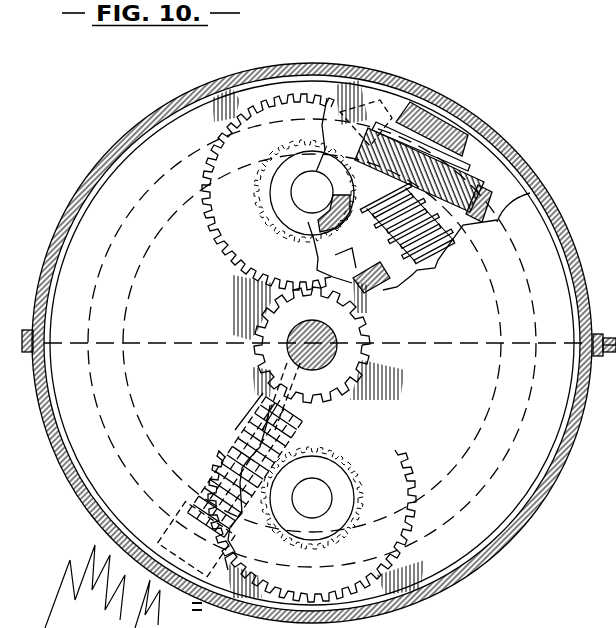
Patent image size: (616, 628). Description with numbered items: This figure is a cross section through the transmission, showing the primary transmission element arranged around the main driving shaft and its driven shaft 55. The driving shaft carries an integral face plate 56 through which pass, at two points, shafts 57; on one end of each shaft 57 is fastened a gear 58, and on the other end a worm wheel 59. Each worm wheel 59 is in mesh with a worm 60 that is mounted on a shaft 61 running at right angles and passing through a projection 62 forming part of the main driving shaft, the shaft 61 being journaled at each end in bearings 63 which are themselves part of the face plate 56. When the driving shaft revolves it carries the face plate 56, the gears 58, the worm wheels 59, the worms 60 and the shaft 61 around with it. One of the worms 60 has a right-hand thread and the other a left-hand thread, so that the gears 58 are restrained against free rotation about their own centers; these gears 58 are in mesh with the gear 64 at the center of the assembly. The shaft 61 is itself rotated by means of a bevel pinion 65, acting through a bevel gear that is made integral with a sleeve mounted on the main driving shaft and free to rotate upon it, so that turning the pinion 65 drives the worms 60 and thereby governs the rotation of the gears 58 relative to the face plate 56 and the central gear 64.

The driven shaft 55 is at (335, 355).
The face plate 56 is at (500, 575).
The shaft 57 is at (297, 197).
The gear 58 is at (398, 438).
The worm wheel 59 is at (342, 457).
The worm 60 is at (402, 245).
The shaft 61 is at (192, 491).
The projection 62 is at (382, 289).
The bearing 63 is at (463, 133).
The gear 64 is at (369, 338).
The bevel pinion 65 is at (474, 160).